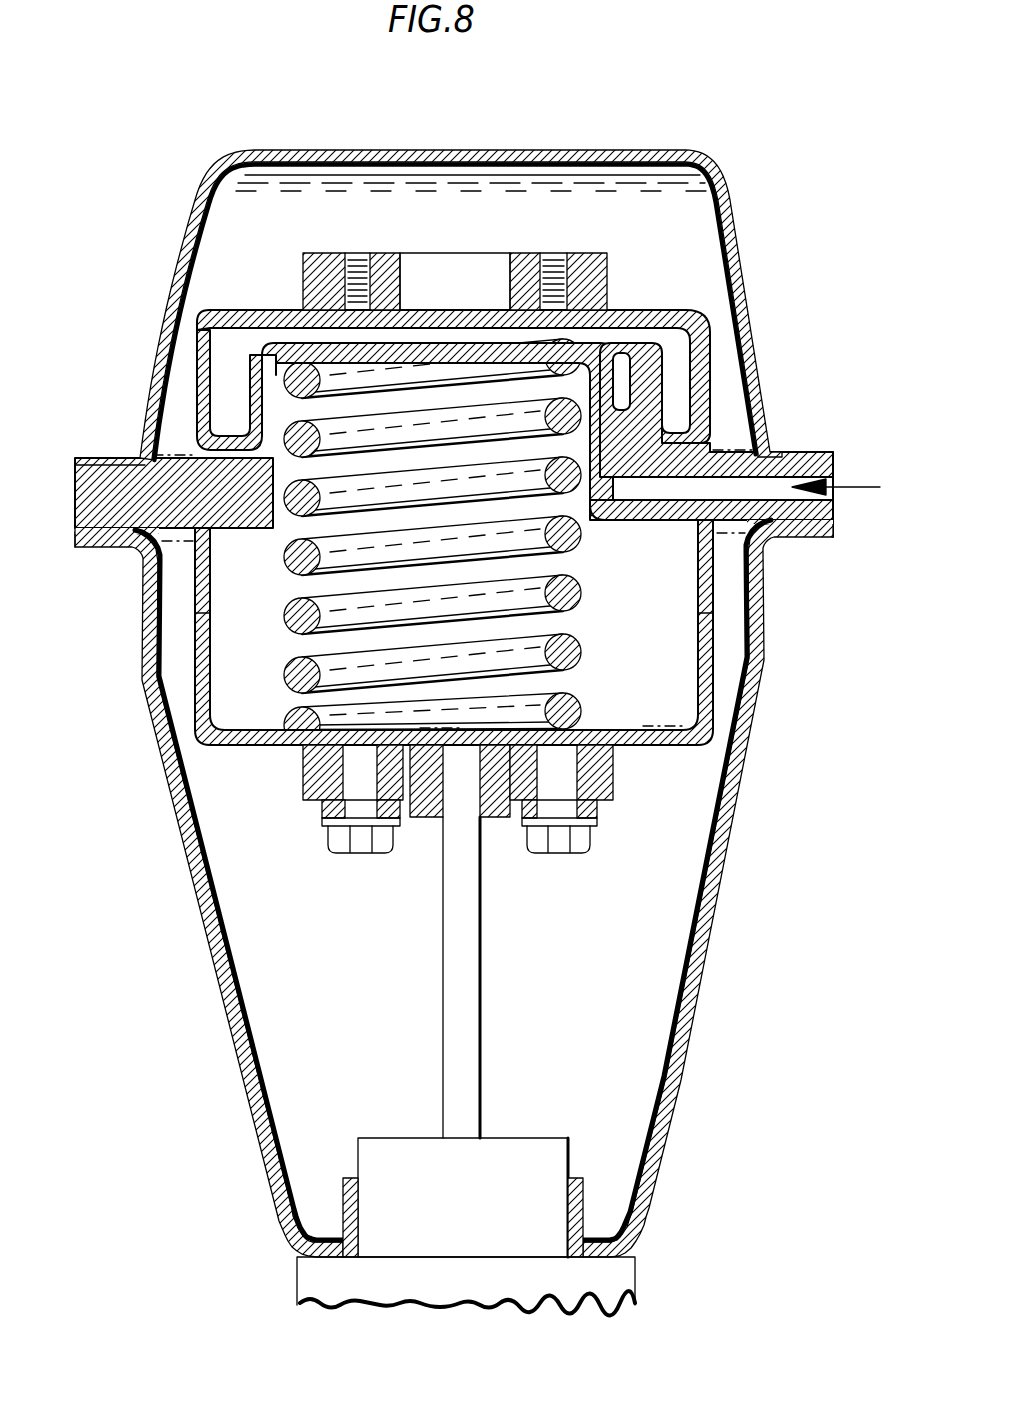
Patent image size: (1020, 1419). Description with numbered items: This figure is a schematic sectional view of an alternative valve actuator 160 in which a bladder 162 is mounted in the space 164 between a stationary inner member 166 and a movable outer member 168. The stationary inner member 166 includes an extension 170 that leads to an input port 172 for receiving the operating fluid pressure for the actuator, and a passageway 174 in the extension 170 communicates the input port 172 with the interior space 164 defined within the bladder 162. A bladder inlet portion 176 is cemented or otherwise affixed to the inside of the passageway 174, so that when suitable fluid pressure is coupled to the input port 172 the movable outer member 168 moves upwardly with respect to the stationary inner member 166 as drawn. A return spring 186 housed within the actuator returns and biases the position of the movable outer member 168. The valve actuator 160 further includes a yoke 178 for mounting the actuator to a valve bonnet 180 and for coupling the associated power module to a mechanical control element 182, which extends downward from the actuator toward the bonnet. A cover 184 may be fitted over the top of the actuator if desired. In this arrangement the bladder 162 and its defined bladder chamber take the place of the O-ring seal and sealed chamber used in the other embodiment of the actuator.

The valve actuator 160 is at (137, 252).
The bladder 162 is at (222, 388).
The space 164 is at (238, 345).
The stationary inner member 166 is at (608, 523).
The movable outer member 168 is at (703, 652).
The extension 170 is at (728, 460).
The input port 172 is at (838, 450).
The passageway 174 is at (752, 497).
The bladder inlet portion 176 is at (648, 343).
The yoke 178 is at (720, 866).
The valve bonnet 180 is at (636, 1290).
The mechanical control element 182 is at (463, 938).
The cover 184 is at (396, 152).
The return spring 186 is at (580, 597).